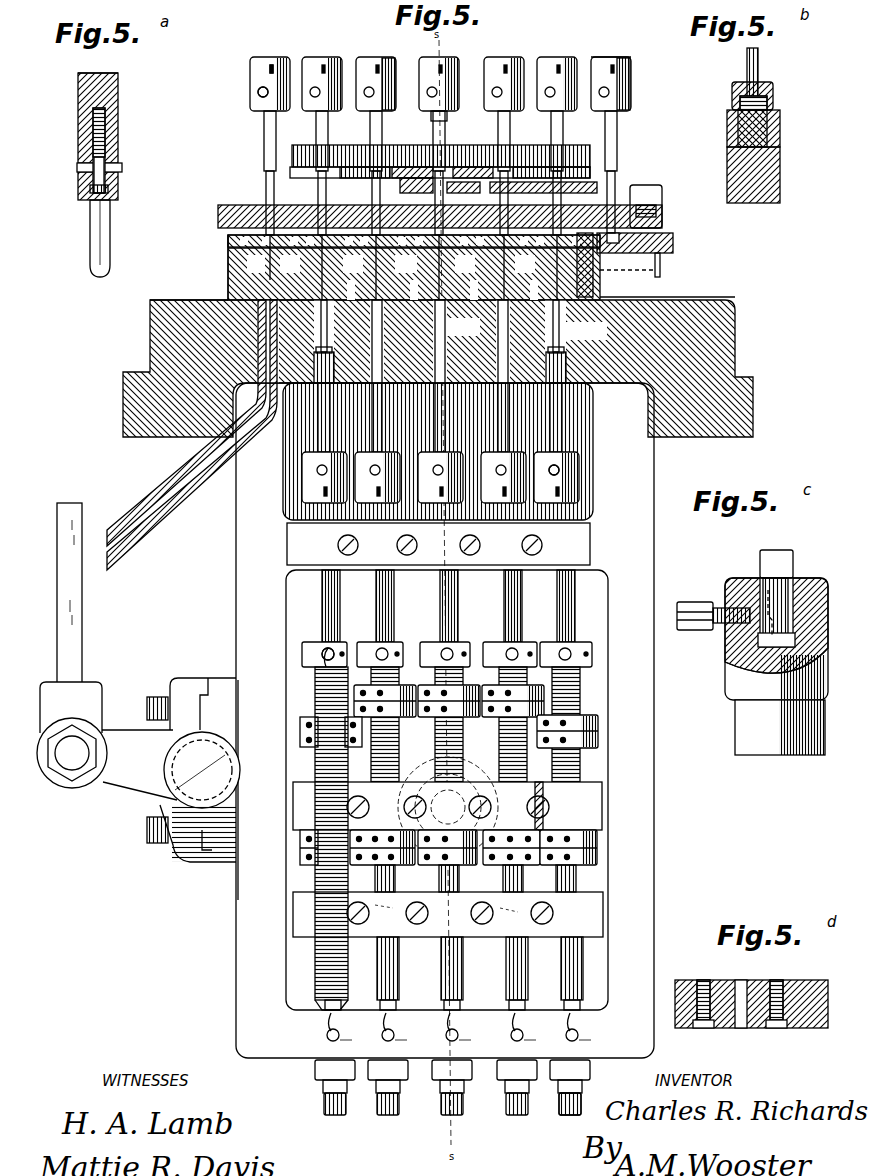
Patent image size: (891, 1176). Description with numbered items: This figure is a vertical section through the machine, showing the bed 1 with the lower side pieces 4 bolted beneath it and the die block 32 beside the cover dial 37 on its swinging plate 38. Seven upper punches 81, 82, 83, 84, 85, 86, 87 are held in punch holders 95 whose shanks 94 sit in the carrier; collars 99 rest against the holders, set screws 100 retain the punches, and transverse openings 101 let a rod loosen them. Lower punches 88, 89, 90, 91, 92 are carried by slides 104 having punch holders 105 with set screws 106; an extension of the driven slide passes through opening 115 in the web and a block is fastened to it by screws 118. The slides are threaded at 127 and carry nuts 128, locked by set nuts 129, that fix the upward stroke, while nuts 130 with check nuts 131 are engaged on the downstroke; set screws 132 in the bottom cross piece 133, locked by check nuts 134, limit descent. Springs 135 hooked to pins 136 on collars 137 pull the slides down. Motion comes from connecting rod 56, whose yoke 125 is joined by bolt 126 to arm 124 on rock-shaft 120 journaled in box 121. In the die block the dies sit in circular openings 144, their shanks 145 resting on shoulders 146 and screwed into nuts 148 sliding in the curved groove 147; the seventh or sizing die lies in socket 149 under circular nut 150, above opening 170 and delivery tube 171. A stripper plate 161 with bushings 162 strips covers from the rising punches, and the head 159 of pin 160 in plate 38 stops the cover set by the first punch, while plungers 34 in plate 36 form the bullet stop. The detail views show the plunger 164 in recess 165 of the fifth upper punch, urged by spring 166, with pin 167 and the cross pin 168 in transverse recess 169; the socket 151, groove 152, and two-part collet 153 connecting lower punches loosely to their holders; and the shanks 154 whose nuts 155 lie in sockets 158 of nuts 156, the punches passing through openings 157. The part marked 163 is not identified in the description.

In FIG. 5, the bed 1 is at (735, 345).
In FIG. 5, the lower side pieces 4 is at (236, 569).
In FIG. 5, the die block 32 is at (210, 295).
In FIG. 5, the plungers 34 is at (466, 187).
In FIG. 5, the plate 36 is at (440, 174).
In FIG. 5, the cover dial 37 is at (240, 205).
In FIG. 5, the swinging plate 38 is at (673, 245).
In FIG. 5, the connecting rod 56 is at (82, 652).
In FIG. 5, the first upper punch 81 is at (617, 130).
In FIG. 5, the second upper punch 82 is at (563, 130).
In FIG. 5, the third upper punch 83 is at (510, 130).
In FIG. 5, the fourth upper punch 84 is at (445, 130).
In FIG. 5, the fifth upper punch 85 is at (382, 130).
In FIG. 5A, the fifth upper punch 85 is at (110, 86).
In FIG. 5, the sixth upper punch 86 is at (328, 130).
In FIG. 5, the seventh upper punch 87 is at (276, 132).
In FIG. 5, the second lower punch 88 is at (568, 365).
In FIG. 5, the third lower punch 89 is at (505, 390).
In FIG. 5, the fourth lower punch 90 is at (445, 395).
In FIG. 5, the fifth lower punch 91 is at (382, 398).
In FIG. 5, the sixth lower punch 92 is at (328, 345).
In FIG. 5, the shanks 94 is at (572, 57).
In FIG. 5, the punch holders 95 is at (392, 94).
In FIG. 5, the collars 99 is at (447, 116).
In FIG. 5, the set screws 100 is at (258, 93).
In FIG. 5, the transverse openings 101 is at (268, 68).
In FIG. 5, the slides 104 is at (322, 600).
In FIG. 5C, the slides 104 is at (765, 740).
In FIG. 5, the punch holders 105 is at (308, 470).
In FIG. 5C, the punch holders 105 is at (735, 665).
In FIG. 5, the set screws 106 is at (560, 468).
In FIG. 5C, the set screws 106 is at (693, 602).
In FIG. 5, the opening 115 is at (300, 790).
In FIG. 5, the screws 118 is at (492, 808).
In FIG. 5, the rock-shaft 120 is at (150, 825).
In FIG. 5, the box 121 is at (207, 852).
In FIG. 5, the arm 124 is at (171, 769).
In FIG. 5, the yoke 125 is at (71, 707).
In FIG. 5, the bolt 126 is at (70, 760).
In FIG. 5, the screw threaded portions 127 is at (545, 690).
In FIG. 5, the nuts 128 is at (598, 732).
In FIG. 5, the set nuts 129 is at (598, 720).
In FIG. 5, the nuts 130 is at (598, 842).
In FIG. 5, the check nuts 131 is at (598, 872).
In FIG. 5, the set screws 132 is at (565, 1115).
In FIG. 5, the cross piece 133 is at (482, 1012).
In FIG. 5, the check nuts 134 is at (497, 1087).
In FIG. 5, the springs 135 is at (320, 990).
In FIG. 5, the pins 136 is at (322, 654).
In FIG. 5, the collars 137 is at (488, 642).
In FIG. 5, the circular openings 144 is at (600, 280).
In FIG. 5, the shanks 145 is at (228, 265).
In FIG. 5, the shoulders 146 is at (600, 262).
In FIG. 5, the curved groove 147 is at (523, 329).
In FIG. 5, the nuts 148 is at (600, 293).
In FIG. 5, the socket 149 is at (232, 242).
In FIG. 5, the circular nut 150 is at (228, 238).
In FIG. 5C, the socket 151 is at (793, 590).
In FIG. 5C, the groove 152 is at (770, 590).
In FIG. 5C, the two-part shouldered collet 153 is at (793, 558).
In FIG. 5, the shanks 154 is at (440, 384).
In FIG. 5B, the shanks 154 is at (770, 185).
In FIG. 5B, the nuts 155 is at (773, 100).
In FIG. 5B, the nuts 156 is at (780, 125).
In FIG. 5B, the openings 157 is at (747, 80).
In FIG. 5B, the sockets 158 is at (740, 100).
In FIG. 5, the head 159 is at (662, 215).
In FIG. 5, the pin 160 is at (673, 240).
In FIG. 5, the stripper plate 161 is at (592, 185).
In FIG. 5D, the stripper plate 161 is at (805, 985).
In FIG. 5D, the bushings 162 is at (728, 982).
In FIG. 5A, the needle 163 is at (112, 198).
In FIG. 5A, the plunger 164 is at (94, 158).
In FIG. 5A, the recess 165 is at (105, 115).
In FIG. 5A, the spring 166 is at (82, 105).
In FIG. 5A, the pin 167 is at (82, 192).
In FIG. 5, the pin 168 is at (370, 179).
In FIG. 5A, the pin 168 is at (78, 165).
In FIG. 5A, the transverse recess 169 is at (90, 175).
In FIG. 5, the opening 170 is at (228, 250).
In FIG. 5, the delivery tube 171 is at (258, 345).